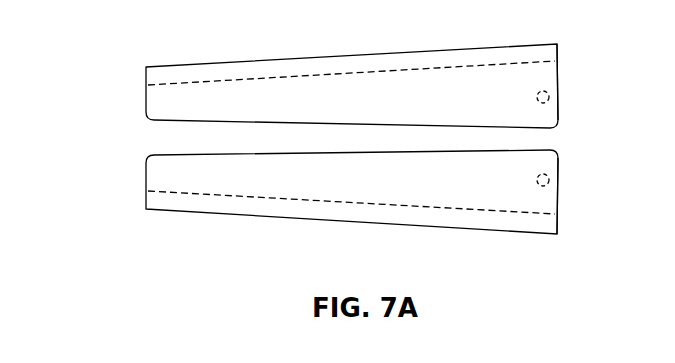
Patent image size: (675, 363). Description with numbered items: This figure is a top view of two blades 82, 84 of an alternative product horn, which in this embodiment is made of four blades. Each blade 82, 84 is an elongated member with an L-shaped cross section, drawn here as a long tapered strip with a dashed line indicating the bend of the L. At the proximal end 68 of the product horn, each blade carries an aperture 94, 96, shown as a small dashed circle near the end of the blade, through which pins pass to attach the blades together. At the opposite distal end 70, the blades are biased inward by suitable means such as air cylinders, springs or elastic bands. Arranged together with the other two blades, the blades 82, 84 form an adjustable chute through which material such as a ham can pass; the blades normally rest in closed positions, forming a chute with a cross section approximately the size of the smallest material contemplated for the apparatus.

The distal end 70 is at (130, 92).
The blade 82 is at (357, 62).
The blade 84 is at (357, 210).
The proximal end 68 is at (545, 77).
The aperture 94 is at (548, 98).
The aperture 96 is at (548, 180).